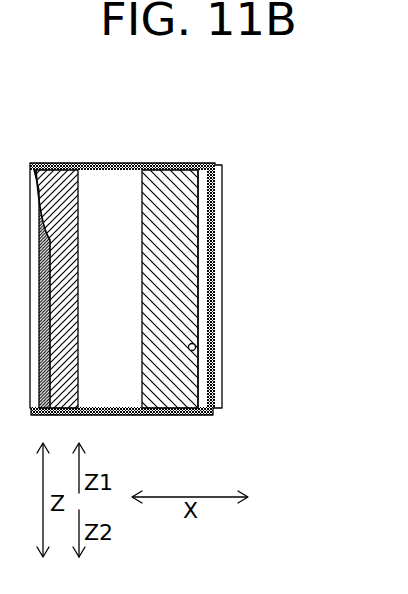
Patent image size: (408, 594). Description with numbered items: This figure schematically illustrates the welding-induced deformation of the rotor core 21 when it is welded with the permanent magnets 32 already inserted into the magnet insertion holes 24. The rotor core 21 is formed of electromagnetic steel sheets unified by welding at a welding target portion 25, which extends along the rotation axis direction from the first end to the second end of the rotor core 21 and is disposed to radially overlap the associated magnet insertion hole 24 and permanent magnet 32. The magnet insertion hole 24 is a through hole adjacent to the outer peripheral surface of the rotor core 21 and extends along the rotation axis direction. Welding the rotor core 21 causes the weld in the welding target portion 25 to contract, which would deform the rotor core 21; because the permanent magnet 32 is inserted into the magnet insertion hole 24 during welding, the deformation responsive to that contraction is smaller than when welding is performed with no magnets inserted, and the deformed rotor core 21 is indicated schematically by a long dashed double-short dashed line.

The rotor core 21 is at (224, 172).
The welding target portion 25 is at (50, 180).
The permanent magnet 32 is at (160, 182).
The magnet insertion hole 24 is at (195, 349).